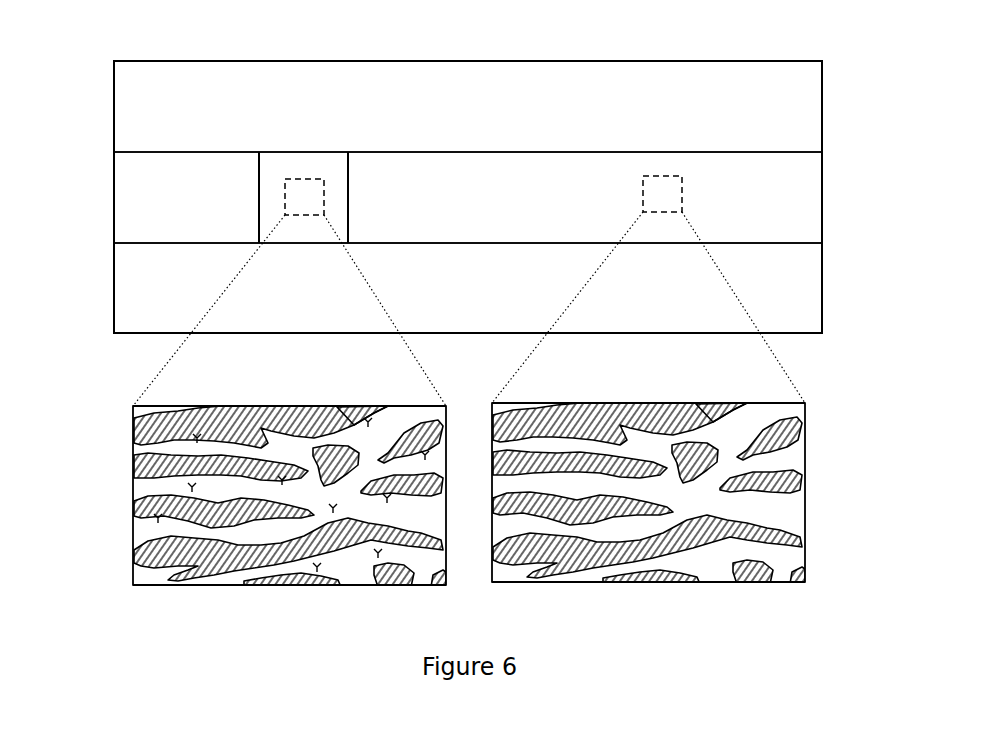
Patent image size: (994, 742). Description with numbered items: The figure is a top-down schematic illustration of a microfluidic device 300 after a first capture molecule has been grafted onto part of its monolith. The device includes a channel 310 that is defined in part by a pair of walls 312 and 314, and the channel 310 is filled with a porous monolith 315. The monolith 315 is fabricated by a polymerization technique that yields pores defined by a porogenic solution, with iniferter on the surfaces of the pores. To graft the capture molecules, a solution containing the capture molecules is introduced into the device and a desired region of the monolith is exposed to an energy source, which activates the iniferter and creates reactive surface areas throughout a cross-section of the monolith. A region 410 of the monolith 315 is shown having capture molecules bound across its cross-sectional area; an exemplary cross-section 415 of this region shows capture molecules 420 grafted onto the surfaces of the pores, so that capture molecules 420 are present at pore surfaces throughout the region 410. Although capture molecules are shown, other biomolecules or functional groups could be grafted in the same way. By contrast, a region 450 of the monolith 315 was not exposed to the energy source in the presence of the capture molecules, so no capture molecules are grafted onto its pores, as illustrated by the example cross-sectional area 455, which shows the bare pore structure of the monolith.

The microfluidic device 300 is at (821, 343).
The channel 310 is at (825, 152).
The wall 312 is at (822, 290).
The wall 314 is at (822, 102).
The porous monolith 315 is at (806, 205).
The region of the monolith 410 is at (348, 195).
The exemplary cross-section 415 is at (96, 500).
The capture molecules 420 is at (333, 513).
The region of the monolith 450 is at (682, 190).
The example cross-sectional area 455 is at (827, 498).